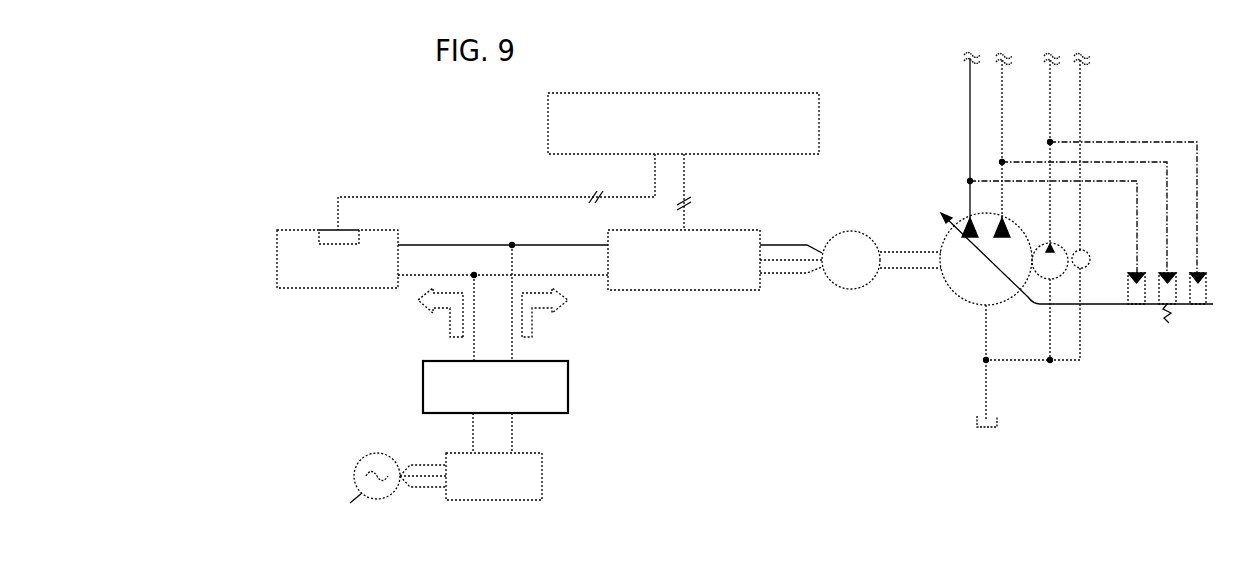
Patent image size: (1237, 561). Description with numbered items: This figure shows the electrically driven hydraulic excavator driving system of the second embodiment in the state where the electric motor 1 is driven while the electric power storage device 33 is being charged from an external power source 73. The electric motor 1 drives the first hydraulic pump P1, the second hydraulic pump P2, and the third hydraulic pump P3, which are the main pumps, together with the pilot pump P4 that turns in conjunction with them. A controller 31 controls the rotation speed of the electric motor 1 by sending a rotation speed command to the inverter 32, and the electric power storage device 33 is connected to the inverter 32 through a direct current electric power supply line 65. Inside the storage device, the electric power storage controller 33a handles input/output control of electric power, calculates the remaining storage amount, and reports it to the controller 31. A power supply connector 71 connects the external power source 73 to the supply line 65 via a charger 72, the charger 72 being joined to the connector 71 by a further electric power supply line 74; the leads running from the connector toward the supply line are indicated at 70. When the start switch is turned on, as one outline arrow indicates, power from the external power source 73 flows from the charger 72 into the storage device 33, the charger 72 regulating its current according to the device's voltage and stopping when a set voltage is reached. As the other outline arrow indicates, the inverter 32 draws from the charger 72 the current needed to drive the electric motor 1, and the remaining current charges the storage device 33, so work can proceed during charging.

The electric motor 1 is at (850, 230).
The controller 31 is at (819, 123).
The inverter 32 is at (668, 290).
The electric power storage device 33 is at (338, 288).
The electric power storage controller 33a is at (331, 232).
The electric power supply line 65 is at (422, 273).
The charging wire 70 is at (512, 357).
The power supply connector 71 is at (568, 385).
The charger 72 is at (542, 475).
The external power source 73 is at (317, 478).
The electric power supply line 74 is at (512, 430).
The first hydraulic pump P1 is at (962, 145).
The second hydraulic pump P2 is at (1009, 146).
The third hydraulic pump P3 is at (1052, 207).
The pilot pump P4 is at (1089, 207).